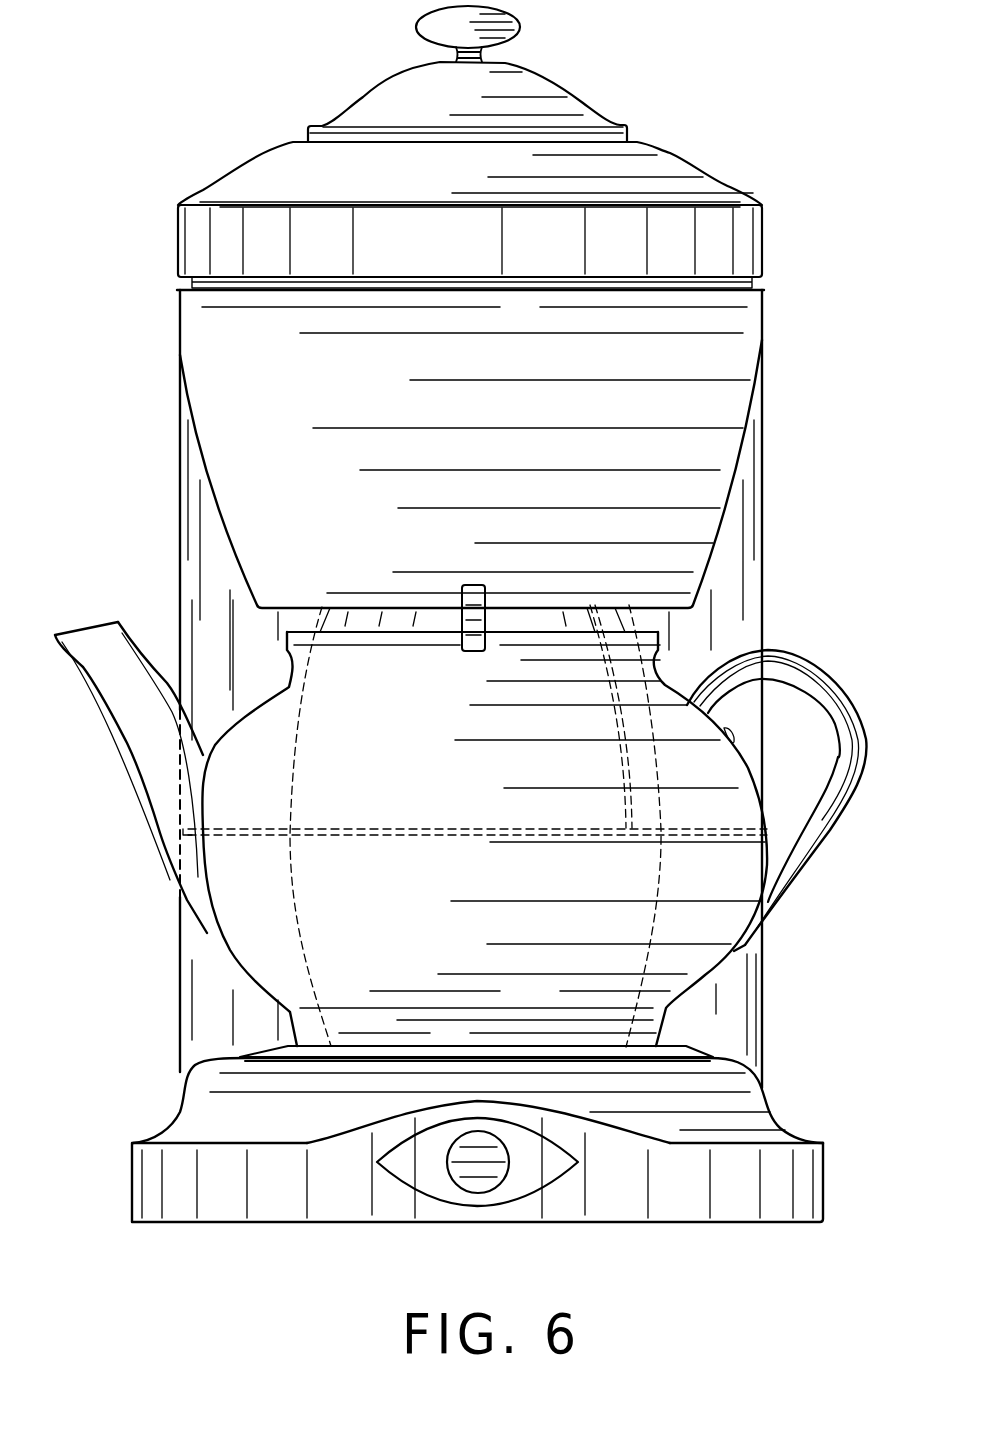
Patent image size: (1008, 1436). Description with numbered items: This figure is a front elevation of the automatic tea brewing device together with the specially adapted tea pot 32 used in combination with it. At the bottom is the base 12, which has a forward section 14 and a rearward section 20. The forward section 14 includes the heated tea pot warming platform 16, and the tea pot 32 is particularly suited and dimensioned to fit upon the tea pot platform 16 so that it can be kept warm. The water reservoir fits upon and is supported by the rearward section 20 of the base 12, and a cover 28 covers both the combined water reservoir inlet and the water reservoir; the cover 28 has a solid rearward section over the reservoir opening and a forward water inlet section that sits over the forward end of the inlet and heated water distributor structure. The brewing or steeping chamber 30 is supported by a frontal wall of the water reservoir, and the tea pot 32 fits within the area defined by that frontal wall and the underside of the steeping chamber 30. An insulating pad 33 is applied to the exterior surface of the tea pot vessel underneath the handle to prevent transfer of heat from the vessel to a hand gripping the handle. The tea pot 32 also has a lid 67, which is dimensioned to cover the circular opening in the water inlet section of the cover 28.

The lid 67 is at (532, 88).
The cover 28 is at (695, 168).
The rearward section 20 is at (759, 537).
The steeping chamber 30 is at (267, 446).
The tea pot 32 is at (406, 778).
The insulating pad 33 is at (749, 752).
The tea pot warming platform 16 is at (528, 1040).
The base 12 is at (778, 1120).
The forward section 14 is at (153, 1178).